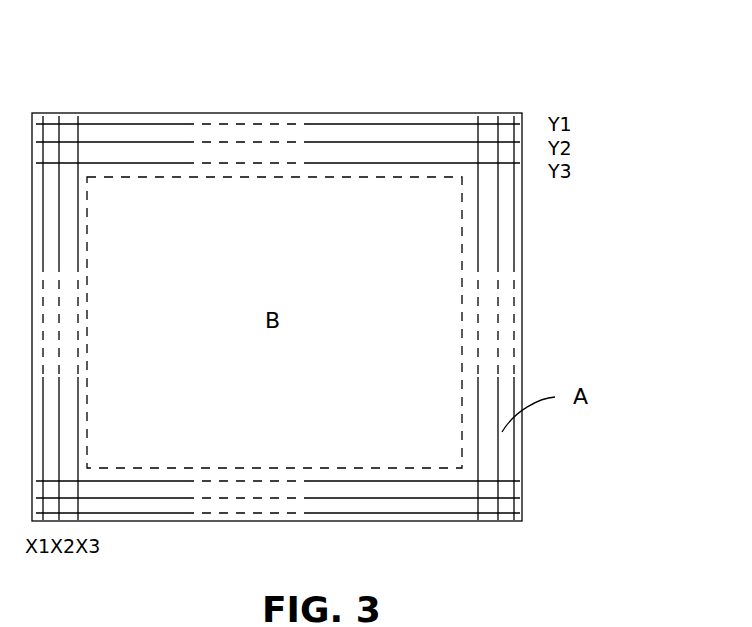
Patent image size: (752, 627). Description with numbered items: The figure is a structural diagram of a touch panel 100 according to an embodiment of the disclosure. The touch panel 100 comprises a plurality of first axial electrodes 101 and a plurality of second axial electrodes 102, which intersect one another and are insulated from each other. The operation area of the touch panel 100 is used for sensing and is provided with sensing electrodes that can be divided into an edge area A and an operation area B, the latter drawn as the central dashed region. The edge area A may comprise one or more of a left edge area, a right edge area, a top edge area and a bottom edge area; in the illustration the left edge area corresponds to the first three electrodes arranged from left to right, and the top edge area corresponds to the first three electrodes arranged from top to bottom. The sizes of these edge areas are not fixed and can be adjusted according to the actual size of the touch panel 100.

The touch panel 100 is at (658, 38).
The first axial electrodes 101 is at (513, 237).
The second axial electrodes 102 is at (346, 114).